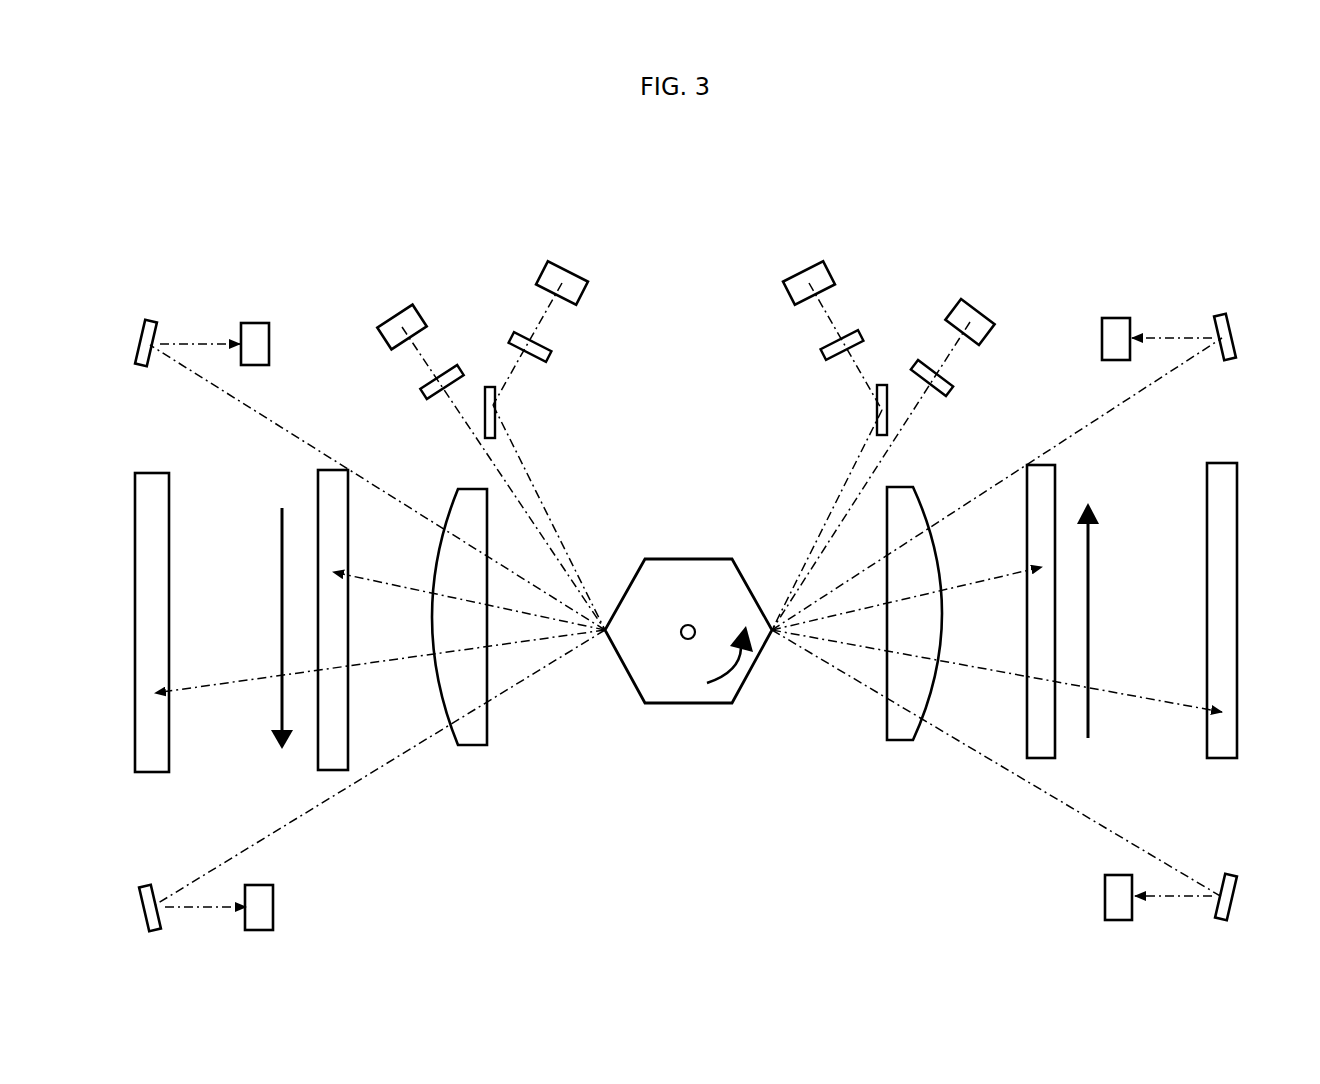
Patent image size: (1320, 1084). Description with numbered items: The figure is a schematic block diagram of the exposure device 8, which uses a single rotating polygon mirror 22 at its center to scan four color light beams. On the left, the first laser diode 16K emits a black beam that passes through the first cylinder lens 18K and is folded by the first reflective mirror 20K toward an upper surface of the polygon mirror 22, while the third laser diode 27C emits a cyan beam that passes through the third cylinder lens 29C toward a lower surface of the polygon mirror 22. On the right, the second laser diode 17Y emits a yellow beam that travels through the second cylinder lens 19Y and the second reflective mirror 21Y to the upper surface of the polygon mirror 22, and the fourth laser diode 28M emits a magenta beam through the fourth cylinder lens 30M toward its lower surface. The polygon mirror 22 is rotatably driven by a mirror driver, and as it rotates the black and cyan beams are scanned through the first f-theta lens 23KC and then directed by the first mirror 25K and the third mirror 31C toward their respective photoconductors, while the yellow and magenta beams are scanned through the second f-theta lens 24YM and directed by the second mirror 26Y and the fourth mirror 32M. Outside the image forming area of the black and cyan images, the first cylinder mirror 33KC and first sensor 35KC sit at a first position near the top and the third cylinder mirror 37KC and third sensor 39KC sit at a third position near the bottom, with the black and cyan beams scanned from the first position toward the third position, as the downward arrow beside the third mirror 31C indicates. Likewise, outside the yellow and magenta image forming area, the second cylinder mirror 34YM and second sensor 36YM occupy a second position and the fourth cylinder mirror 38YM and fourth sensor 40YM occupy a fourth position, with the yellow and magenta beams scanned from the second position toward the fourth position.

The exposure device 8 is at (1116, 180).
The first laser diode 16K is at (598, 258).
The second laser diode 17Y is at (800, 268).
The first cylinder lens 18K is at (553, 355).
The second cylinder lens 19Y is at (825, 355).
The first reflective mirror 20K is at (488, 387).
The second reflective mirror 21Y is at (882, 385).
The polygon mirror 22 is at (700, 706).
The first f-theta lens 23KC is at (470, 748).
The second f-theta lens 24YM is at (900, 742).
The first mirror 25K is at (158, 473).
The second mirror 26Y is at (1225, 463).
The third laser diode 27C is at (390, 310).
The fourth laser diode 28M is at (995, 292).
The third cylinder lens 29C is at (430, 395).
The fourth cylinder lens 30M is at (958, 388).
The third mirror 31C is at (316, 760).
The fourth mirror 32M is at (1057, 742).
The first cylinder mirror 33KC is at (150, 320).
The second cylinder mirror 34YM is at (1250, 855).
The first sensor 35KC is at (262, 323).
The second sensor 36YM is at (1103, 888).
The third cylinder mirror 37KC is at (147, 888).
The fourth cylinder mirror 38YM is at (1220, 316).
The third sensor 39KC is at (275, 892).
The fourth sensor 40YM is at (1137, 290).